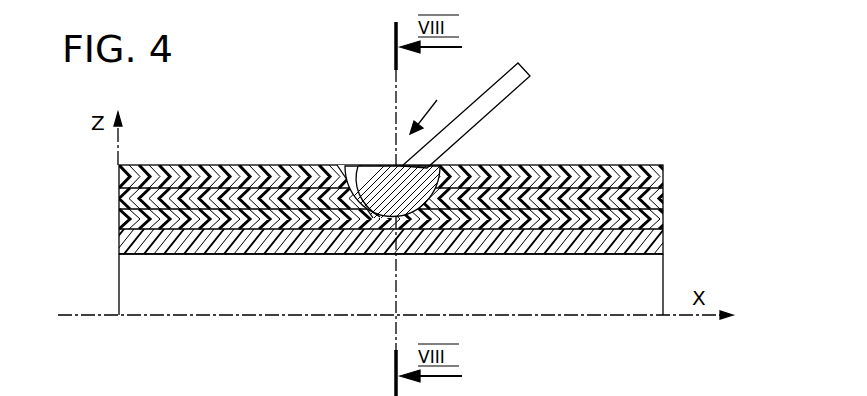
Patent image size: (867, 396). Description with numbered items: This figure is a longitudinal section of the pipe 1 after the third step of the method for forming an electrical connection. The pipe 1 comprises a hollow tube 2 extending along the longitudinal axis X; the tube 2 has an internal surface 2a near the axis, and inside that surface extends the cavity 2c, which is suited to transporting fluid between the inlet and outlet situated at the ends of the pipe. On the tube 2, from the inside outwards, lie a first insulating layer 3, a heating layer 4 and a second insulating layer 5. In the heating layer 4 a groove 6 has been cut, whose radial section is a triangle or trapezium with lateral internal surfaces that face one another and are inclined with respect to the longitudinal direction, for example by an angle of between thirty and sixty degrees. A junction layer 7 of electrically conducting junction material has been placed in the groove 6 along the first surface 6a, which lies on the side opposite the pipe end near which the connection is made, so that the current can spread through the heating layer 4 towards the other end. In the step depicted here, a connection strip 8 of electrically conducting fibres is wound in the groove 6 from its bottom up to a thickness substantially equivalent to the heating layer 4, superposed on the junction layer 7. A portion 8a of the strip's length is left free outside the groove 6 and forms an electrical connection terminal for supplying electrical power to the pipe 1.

The pipe 1 is at (183, 141).
The hollow tube 2 is at (653, 242).
The internal surface 2a is at (163, 254).
The cavity 2c is at (283, 287).
The first insulating layer 3 is at (657, 229).
The heating layer 4 is at (653, 200).
The second insulating layer 5 is at (642, 173).
The groove 6 is at (427, 106).
The first surface 6a is at (340, 190).
The junction layer 7 is at (369, 168).
The connection strip 8 is at (385, 180).
The end portion 8a is at (524, 76).